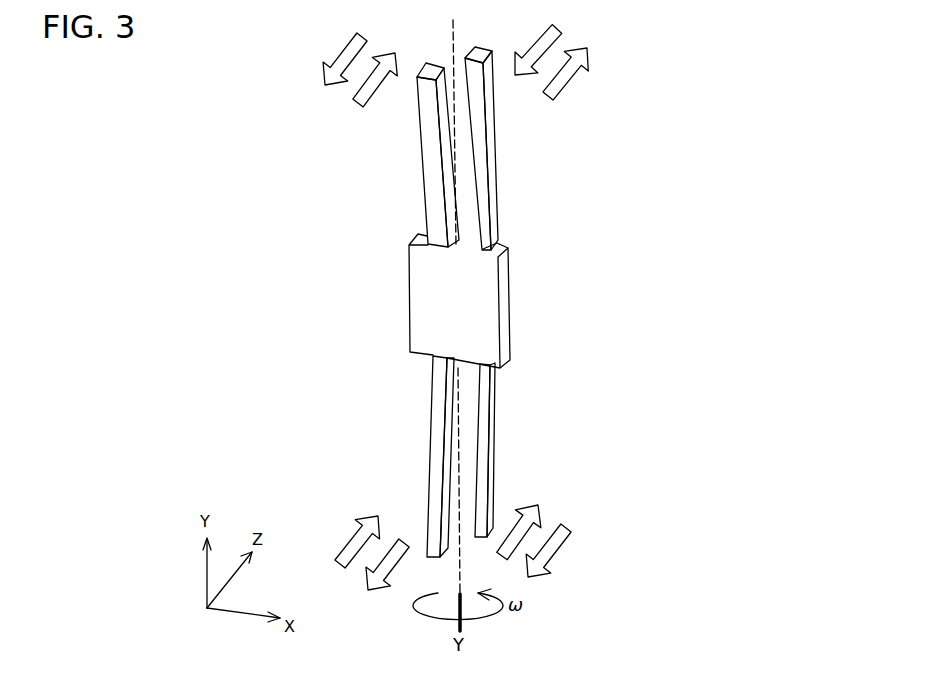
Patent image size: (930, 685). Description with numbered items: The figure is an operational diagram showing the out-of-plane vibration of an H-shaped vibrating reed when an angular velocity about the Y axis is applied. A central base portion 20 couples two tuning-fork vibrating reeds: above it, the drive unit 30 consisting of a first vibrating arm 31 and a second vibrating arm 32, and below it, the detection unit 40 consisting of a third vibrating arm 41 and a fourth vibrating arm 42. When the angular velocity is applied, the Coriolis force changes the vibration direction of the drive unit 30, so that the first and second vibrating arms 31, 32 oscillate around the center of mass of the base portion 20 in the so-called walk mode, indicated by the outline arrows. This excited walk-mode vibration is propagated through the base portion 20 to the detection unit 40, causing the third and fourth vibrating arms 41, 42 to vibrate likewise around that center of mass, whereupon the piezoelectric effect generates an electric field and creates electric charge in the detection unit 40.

The base portion 20 is at (507, 303).
The drive unit 30 is at (502, 148).
The first vibrating arm 31 is at (422, 160).
The second vibrating arm 32 is at (538, 190).
The detection unit 40 is at (439, 452).
The third vibrating arm 41 is at (428, 455).
The fourth vibrating arm 42 is at (493, 447).